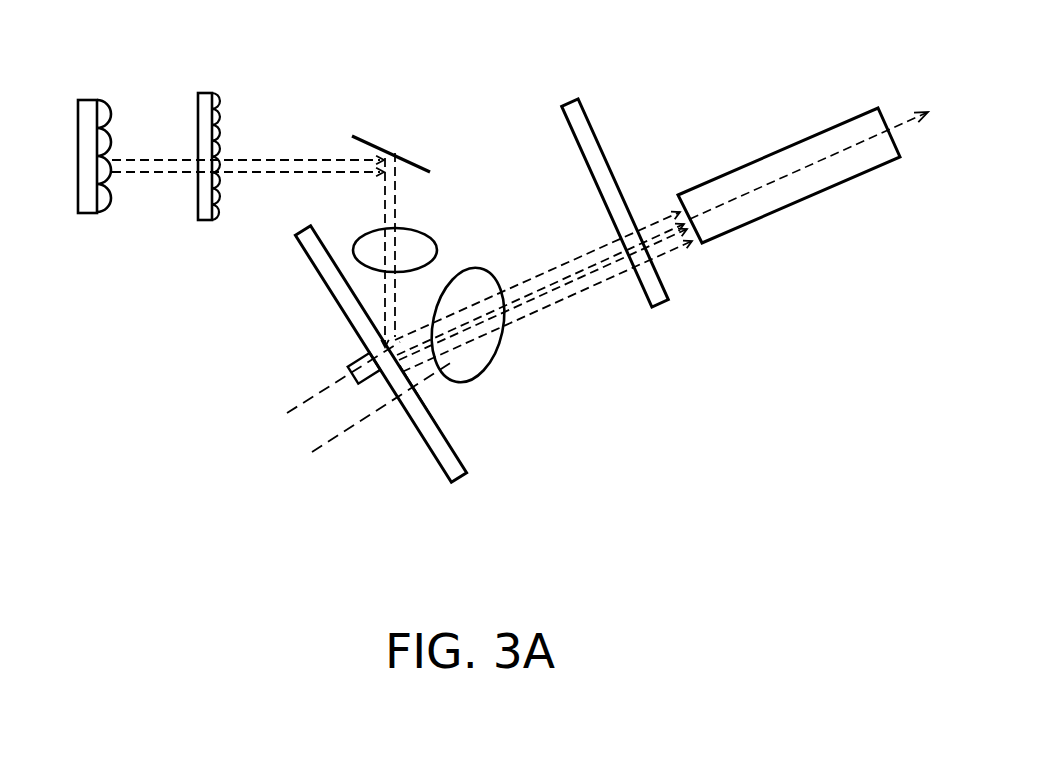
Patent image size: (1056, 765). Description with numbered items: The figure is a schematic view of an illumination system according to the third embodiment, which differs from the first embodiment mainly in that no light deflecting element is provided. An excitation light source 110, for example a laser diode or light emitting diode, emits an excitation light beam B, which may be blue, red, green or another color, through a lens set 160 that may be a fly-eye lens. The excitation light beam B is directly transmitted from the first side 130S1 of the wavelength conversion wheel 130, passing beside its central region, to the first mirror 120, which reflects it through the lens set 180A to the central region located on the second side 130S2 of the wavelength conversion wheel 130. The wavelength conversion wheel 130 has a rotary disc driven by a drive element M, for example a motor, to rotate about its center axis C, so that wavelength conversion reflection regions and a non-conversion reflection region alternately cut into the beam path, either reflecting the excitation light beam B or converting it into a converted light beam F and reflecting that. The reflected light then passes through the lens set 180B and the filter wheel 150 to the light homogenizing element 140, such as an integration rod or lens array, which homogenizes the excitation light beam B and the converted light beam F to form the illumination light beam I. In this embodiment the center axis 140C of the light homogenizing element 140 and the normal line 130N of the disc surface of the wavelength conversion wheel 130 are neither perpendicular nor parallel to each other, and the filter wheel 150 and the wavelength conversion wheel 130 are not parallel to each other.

The excitation light source 110 is at (92, 106).
The lens set 160 is at (206, 102).
The excitation light beam B is at (157, 162).
The first mirror 120 is at (374, 133).
The lens set 180A is at (428, 248).
The wavelength conversion wheel 130 is at (302, 250).
The drive element M is at (347, 366).
The normal line 130N is at (350, 430).
The first side 130S1 is at (412, 458).
The second side 130S2 is at (461, 427).
The lens set 180B is at (500, 352).
The center axis C is at (460, 302).
The converted light beam F is at (590, 277).
The filter wheel 150 is at (571, 110).
The light homogenizing element 140 is at (755, 158).
The center axis 140C is at (807, 167).
The illumination light beam I is at (907, 120).